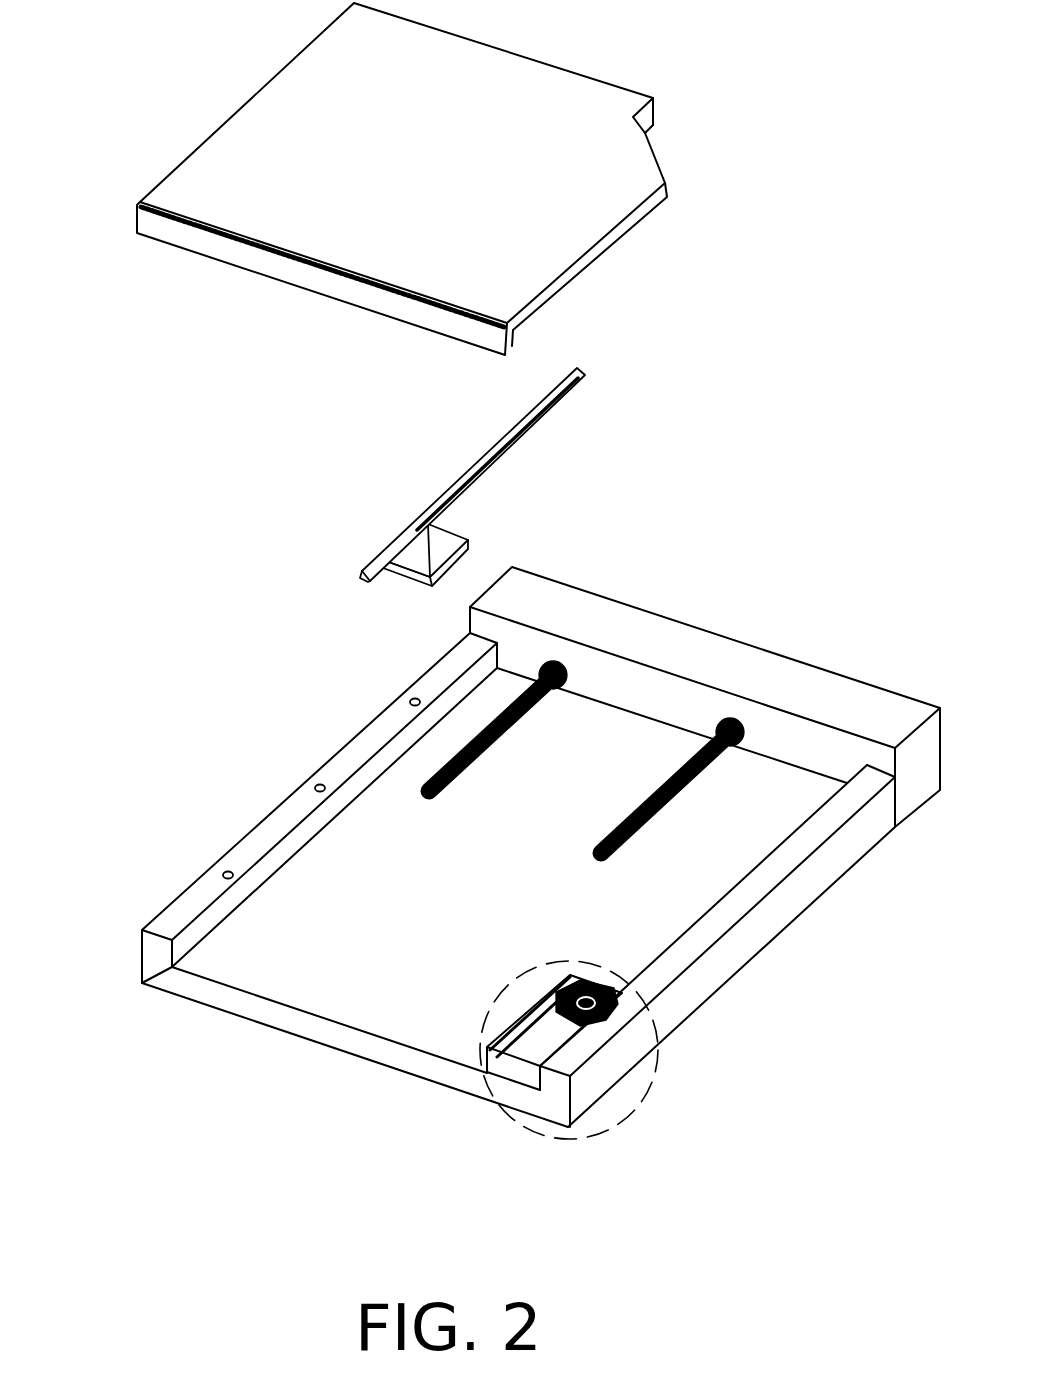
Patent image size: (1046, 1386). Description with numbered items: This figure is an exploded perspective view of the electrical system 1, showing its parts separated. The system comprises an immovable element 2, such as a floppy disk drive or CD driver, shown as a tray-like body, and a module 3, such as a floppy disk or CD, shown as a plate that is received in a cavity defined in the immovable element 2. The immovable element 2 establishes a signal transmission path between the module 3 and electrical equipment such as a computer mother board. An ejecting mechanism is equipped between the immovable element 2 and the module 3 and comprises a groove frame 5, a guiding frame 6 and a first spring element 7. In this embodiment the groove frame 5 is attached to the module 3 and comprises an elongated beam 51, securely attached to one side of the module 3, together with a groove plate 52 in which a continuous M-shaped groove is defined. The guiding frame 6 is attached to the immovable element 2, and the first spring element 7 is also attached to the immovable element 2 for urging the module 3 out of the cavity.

The electrical system 1 is at (89, 186).
The immovable element 2 is at (273, 775).
The module 3 is at (235, 80).
The groove frame 5 is at (376, 515).
The elongated beam 51 is at (472, 467).
The groove plate 52 is at (470, 544).
The guiding frame 6 is at (555, 1012).
The first spring element 7 is at (730, 720).